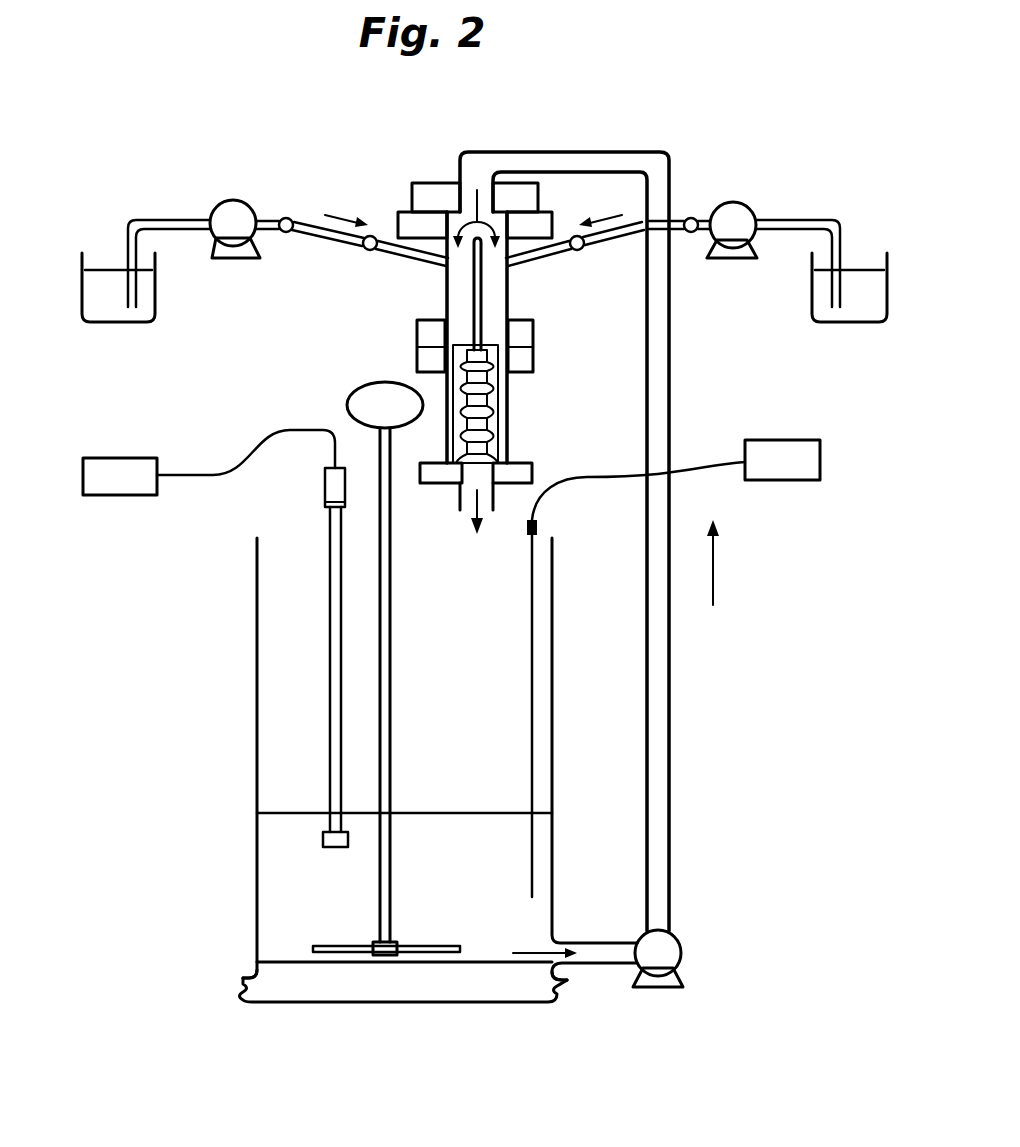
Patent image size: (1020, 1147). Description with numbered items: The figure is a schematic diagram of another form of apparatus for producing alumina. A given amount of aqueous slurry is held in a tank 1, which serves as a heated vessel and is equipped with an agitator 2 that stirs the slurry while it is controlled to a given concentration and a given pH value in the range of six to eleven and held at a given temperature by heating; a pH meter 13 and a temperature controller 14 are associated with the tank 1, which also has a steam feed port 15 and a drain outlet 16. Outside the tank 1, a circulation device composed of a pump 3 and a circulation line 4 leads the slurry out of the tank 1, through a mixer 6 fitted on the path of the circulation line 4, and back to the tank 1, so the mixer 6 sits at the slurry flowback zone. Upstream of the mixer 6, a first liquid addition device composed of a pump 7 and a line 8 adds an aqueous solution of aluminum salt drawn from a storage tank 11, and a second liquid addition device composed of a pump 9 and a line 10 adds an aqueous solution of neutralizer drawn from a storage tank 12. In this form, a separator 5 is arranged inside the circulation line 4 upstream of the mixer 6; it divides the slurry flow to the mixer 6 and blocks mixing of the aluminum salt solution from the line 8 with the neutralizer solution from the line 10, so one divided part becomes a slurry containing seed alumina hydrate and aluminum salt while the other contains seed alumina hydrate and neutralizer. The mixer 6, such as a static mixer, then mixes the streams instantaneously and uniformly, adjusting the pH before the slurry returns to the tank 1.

The tank 1 is at (257, 710).
The agitator 2 is at (362, 387).
The pump 3 is at (683, 940).
The circulation line 4 is at (670, 712).
The separator 5 is at (483, 293).
The mixer 6 is at (499, 398).
The pump 7 is at (244, 202).
The line 8 is at (310, 220).
The pump 9 is at (748, 205).
The line 10 is at (633, 222).
The storage tank for an aqueous solution of aluminum salt 11 is at (147, 297).
The storage tank for an aqueous solution of neutralizer 12 is at (812, 297).
The pH meter 13 is at (130, 497).
The temperature controller 14 is at (783, 440).
The steam feed port 15 is at (560, 990).
The drain outlet 16 is at (243, 990).